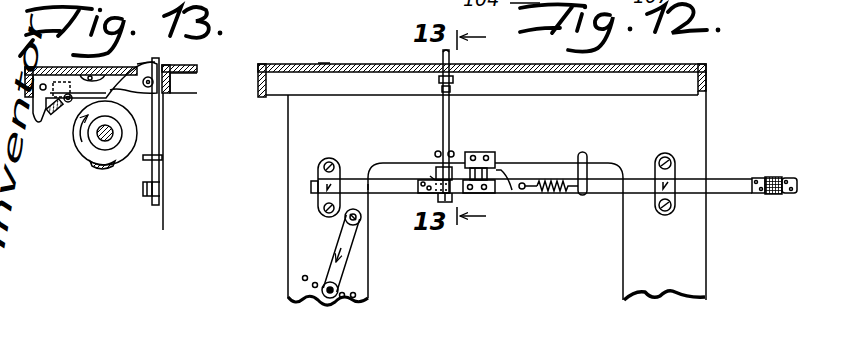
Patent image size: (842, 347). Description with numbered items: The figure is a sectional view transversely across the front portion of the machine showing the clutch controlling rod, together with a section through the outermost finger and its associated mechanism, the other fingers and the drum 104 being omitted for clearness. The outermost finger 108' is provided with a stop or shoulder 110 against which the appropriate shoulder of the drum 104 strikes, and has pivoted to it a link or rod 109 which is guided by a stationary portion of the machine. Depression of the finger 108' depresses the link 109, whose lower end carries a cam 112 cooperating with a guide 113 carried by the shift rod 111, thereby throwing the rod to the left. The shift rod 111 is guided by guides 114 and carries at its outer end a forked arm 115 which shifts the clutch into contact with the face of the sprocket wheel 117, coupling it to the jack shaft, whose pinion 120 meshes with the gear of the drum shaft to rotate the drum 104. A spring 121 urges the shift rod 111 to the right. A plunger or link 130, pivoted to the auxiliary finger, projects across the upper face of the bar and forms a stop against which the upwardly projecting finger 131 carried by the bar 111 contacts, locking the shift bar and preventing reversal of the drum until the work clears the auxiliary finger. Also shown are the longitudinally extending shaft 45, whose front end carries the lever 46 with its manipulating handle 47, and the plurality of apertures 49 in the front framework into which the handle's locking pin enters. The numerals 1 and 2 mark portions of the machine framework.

In FIG. 12, the frame plate 1 is at (318, 63).
In FIG. 13, the side panel 2 is at (163, 217).
In FIG. 12, the side panel 2 is at (288, 210).
In FIG. 12, the longitudinally extending shaft 45 is at (348, 219).
In FIG. 12, the lever 46 is at (345, 256).
In FIG. 12, the manipulating handle 47 is at (334, 289).
In FIG. 12, the apertures 49 is at (306, 272).
In FIG. 13, the drum 104 is at (77, 152).
In FIG. 13, the outermost finger 108' is at (184, 63).
In FIG. 12, the outermost finger 108' is at (398, 50).
In FIG. 13, the link or rod 109 is at (161, 132).
In FIG. 12, the link or rod 109 is at (452, 110).
In FIG. 13, the stop or shoulder 110 is at (147, 95).
In FIG. 13, the shift rod 111 is at (160, 187).
In FIG. 12, the shift rod 111 is at (640, 184).
In FIG. 12, the cam 112 is at (427, 176).
In FIG. 13, the guide 113 is at (142, 188).
In FIG. 12, the guide 113 is at (433, 178).
In FIG. 12, the guides 114 is at (318, 184).
In FIG. 12, the forked arm 115 is at (774, 175).
In FIG. 12, the sprocket wheel 117 is at (747, 0).
In FIG. 12, the pinion 120 is at (482, 153).
In FIG. 12, the spring 121 is at (548, 196).
In FIG. 12, the plunger or link 130 is at (512, 190).
In FIG. 12, the upwardly projecting finger 131 is at (462, 165).